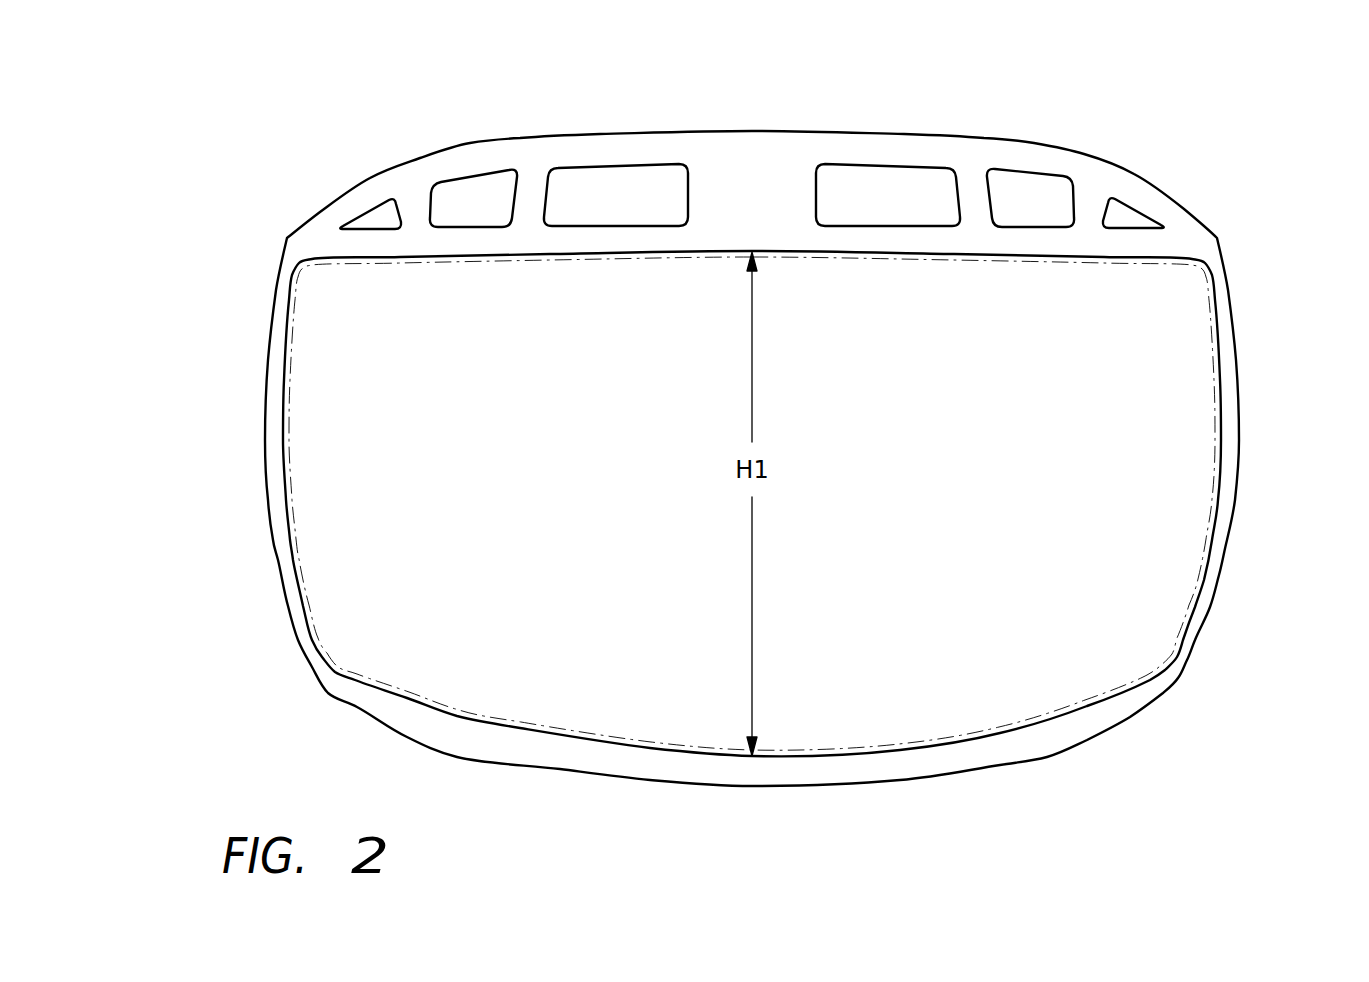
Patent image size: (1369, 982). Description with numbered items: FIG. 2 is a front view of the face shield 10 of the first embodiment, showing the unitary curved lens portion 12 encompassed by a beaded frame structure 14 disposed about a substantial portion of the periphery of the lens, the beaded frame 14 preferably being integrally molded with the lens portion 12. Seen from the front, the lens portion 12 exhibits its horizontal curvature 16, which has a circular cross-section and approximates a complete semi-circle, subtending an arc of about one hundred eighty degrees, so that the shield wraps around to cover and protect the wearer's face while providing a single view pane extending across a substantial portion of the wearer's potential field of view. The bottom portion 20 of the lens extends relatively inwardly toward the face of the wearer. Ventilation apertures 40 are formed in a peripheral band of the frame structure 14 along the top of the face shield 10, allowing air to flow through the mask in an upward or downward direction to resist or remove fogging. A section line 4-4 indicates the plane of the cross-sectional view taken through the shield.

The face shield 10 is at (1152, 88).
The lens portion 12 is at (968, 397).
The beaded frame structure 14 is at (1237, 357).
The horizontal curvature 16 is at (670, 757).
The bottom portion 20 is at (327, 628).
The ventilation apertures 40 is at (618, 190).
The section line 4- 4 is at (265, 442).